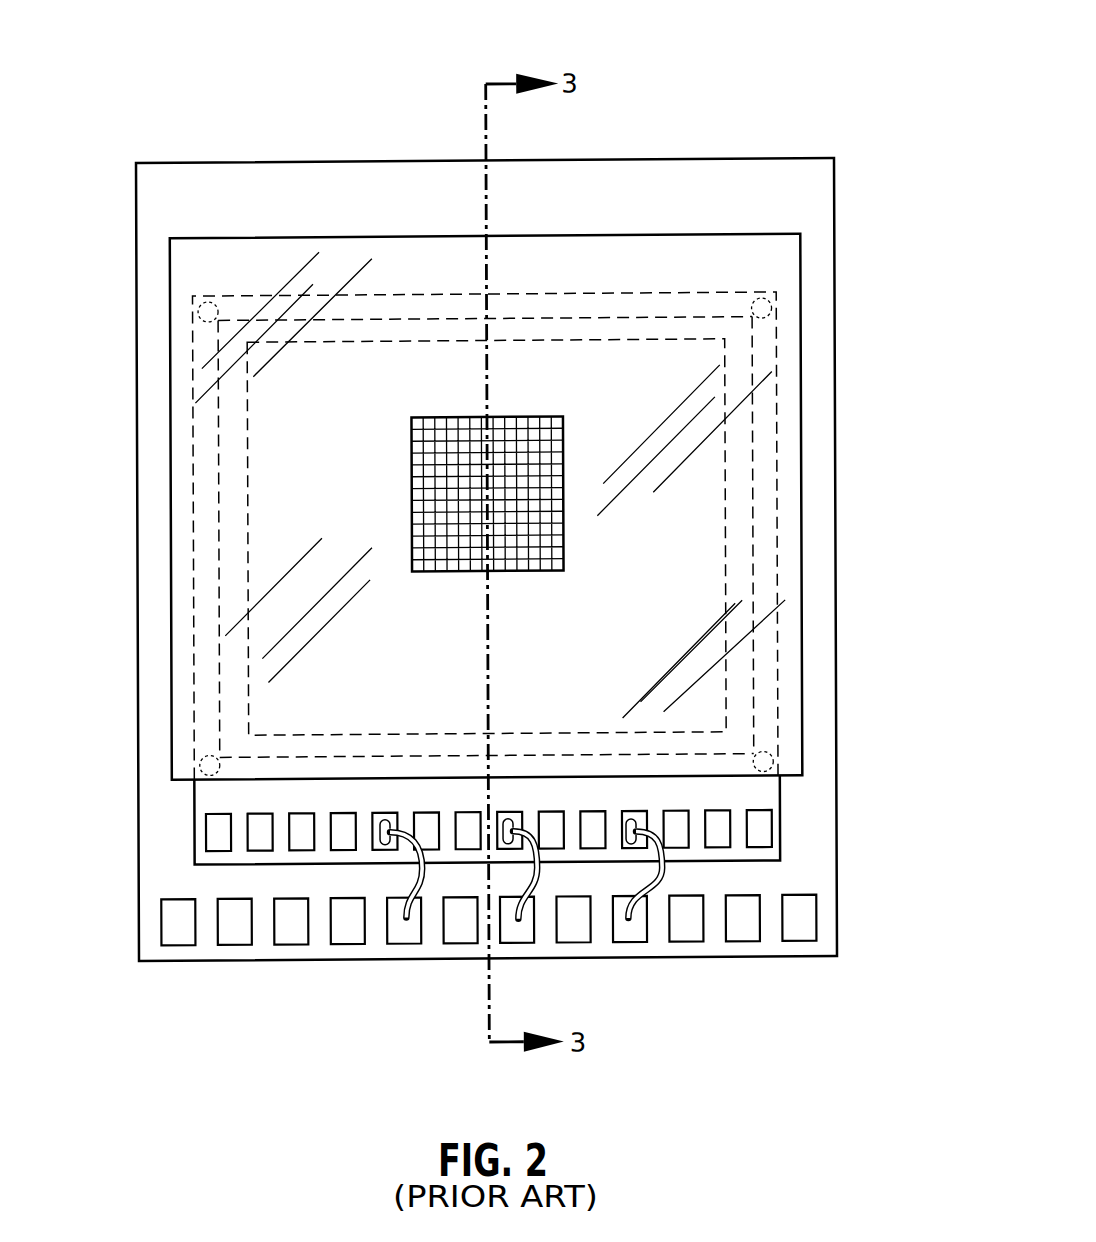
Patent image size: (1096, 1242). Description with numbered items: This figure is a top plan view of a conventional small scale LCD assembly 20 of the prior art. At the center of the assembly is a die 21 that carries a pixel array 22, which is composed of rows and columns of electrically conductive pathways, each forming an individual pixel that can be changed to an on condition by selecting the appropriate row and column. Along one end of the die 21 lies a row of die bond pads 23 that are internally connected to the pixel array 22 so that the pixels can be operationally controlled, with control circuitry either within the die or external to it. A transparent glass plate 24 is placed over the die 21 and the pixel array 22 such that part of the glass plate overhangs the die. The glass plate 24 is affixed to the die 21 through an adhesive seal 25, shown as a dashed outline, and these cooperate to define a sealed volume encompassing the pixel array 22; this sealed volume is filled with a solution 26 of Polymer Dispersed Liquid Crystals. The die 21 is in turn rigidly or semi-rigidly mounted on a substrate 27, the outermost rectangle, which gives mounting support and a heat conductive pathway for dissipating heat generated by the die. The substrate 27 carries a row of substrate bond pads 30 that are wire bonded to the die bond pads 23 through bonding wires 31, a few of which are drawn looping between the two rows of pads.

The small scale LCD assembly 20 is at (735, 52).
The die 21 is at (794, 825).
The pixel array 22 is at (549, 436).
The die bond pads 23 is at (260, 828).
The transparent glass plate 24 is at (814, 258).
The adhesive seal 25 is at (724, 528).
The solution of Polymer Dispersed Liquid Crystals 26 is at (263, 417).
The substrate 27 is at (842, 174).
The substrate bond pads 30 is at (741, 936).
The bonding wires 31 is at (411, 863).